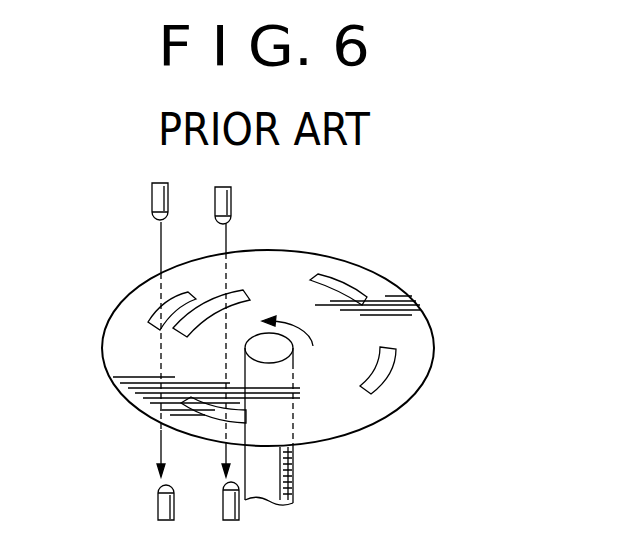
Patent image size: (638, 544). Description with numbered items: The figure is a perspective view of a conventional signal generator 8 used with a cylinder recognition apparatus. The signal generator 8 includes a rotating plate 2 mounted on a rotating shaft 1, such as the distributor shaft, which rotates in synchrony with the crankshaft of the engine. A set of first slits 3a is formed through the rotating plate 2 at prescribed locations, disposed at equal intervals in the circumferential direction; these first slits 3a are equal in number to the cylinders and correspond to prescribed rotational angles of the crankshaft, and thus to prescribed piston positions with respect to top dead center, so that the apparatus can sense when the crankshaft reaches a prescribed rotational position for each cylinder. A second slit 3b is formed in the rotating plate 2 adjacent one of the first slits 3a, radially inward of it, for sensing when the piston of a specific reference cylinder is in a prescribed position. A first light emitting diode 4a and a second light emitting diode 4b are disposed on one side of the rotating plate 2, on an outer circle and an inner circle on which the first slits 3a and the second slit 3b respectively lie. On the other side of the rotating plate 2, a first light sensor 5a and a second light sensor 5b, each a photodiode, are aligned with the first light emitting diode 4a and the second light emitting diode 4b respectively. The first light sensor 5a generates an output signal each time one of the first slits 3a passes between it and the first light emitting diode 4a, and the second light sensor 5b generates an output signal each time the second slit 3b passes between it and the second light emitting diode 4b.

The rotating shaft 1 is at (320, 482).
The rotating plate 2 is at (420, 304).
The first slits 3a is at (152, 316).
The second slit 3b is at (247, 288).
The first light emitting diode 4a is at (152, 193).
The second light emitting diode 4b is at (231, 197).
The first light sensor 5a is at (158, 505).
The second light sensor 5b is at (239, 508).
The signal generator 8 is at (362, 432).